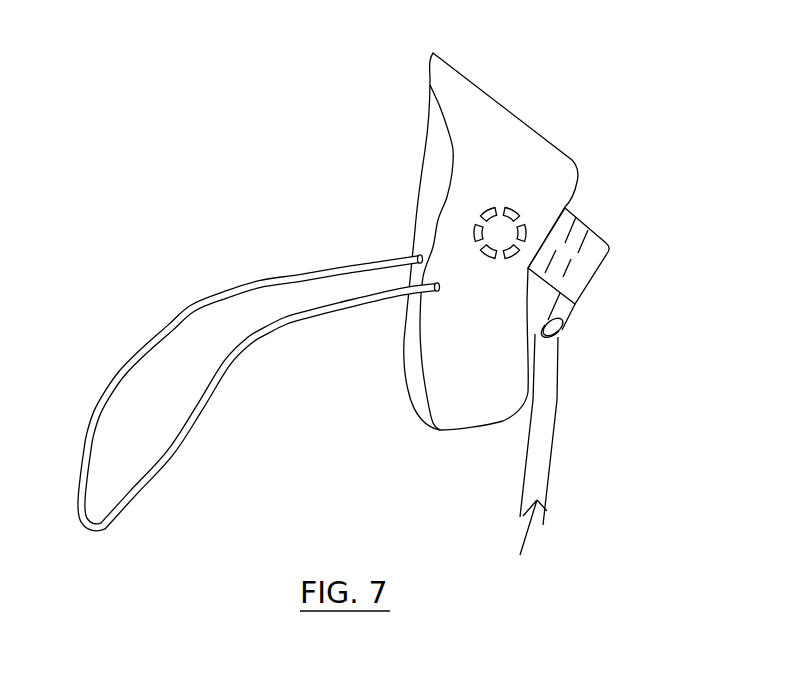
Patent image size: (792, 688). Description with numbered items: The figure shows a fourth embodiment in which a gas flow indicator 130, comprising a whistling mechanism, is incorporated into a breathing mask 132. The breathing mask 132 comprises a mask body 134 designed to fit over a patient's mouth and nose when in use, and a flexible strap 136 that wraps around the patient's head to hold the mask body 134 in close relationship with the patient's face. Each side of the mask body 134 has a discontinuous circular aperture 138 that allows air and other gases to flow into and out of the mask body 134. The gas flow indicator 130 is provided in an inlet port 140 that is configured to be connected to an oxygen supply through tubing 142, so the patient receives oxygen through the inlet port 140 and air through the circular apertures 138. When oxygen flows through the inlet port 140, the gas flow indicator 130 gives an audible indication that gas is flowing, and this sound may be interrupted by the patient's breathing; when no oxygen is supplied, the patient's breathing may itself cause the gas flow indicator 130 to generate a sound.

The gas flow indicator 130 is at (605, 240).
The breathing mask 132 is at (372, 124).
The mask body 134 is at (473, 98).
The flexible strap 136 is at (262, 284).
The discontinuous circular aperture 138 is at (525, 194).
The inlet port 140 is at (585, 277).
The tubing 142 is at (547, 413).